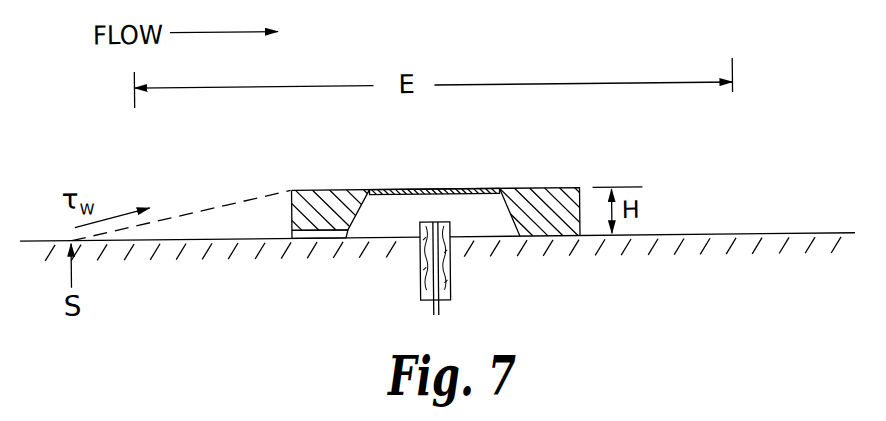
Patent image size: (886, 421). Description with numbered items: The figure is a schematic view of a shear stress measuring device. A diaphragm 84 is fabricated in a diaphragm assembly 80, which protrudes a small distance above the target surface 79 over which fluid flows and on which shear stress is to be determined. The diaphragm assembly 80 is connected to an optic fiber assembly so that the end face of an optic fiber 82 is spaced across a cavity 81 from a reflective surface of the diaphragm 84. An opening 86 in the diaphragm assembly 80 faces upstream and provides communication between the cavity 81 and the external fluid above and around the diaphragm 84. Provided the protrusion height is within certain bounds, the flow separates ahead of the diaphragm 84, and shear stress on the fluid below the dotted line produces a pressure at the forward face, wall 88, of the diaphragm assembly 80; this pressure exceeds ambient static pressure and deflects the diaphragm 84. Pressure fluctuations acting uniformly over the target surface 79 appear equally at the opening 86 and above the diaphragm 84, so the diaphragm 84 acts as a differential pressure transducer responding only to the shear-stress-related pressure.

The target surface 79 is at (685, 235).
The diaphragm assembly 80 is at (582, 199).
The cavity 81 is at (404, 225).
The optic fiber 82 is at (452, 284).
The diaphragm 84 is at (439, 189).
The opening 86 is at (289, 230).
The wall 88 is at (266, 194).